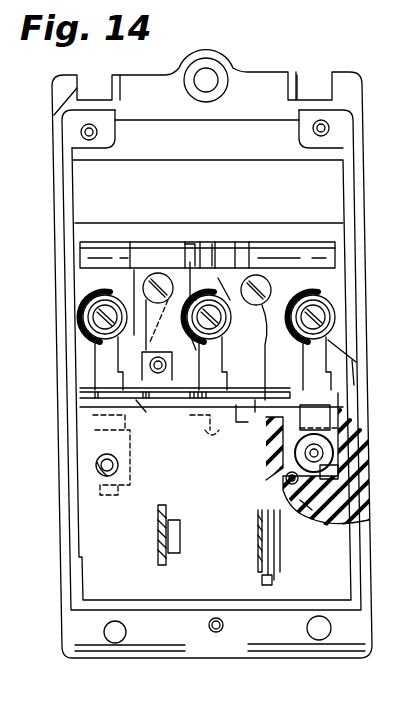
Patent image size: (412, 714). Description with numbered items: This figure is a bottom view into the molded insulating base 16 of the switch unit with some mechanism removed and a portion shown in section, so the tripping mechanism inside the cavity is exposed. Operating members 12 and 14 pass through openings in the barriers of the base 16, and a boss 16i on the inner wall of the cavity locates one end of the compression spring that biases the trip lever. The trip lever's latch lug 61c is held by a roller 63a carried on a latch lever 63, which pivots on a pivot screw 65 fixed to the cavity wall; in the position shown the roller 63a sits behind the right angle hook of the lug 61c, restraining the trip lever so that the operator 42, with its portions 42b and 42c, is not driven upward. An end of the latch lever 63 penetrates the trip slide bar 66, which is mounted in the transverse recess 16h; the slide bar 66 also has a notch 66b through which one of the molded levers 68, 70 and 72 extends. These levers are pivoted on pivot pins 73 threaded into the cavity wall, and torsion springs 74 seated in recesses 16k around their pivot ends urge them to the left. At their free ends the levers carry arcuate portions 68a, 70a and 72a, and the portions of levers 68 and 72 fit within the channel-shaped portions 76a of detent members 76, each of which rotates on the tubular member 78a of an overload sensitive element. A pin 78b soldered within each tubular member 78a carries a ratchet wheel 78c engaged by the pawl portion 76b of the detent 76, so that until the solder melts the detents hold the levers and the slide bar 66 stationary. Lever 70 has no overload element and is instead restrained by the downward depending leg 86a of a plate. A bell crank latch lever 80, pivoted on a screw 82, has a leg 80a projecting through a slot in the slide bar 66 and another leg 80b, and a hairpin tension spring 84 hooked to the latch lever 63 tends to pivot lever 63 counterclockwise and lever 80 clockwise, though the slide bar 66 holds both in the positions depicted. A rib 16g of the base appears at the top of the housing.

The operating member 12 is at (272, 579).
The operating member 14 is at (156, 524).
The molded insulating base 16 is at (148, 652).
The housing rib 16g is at (298, 88).
The transverse recess 16h is at (353, 371).
The boss 16i is at (97, 468).
The recesses 16k is at (84, 285).
The operator 42 is at (100, 252).
The strip portion 42b is at (183, 246).
The strip portion 42c is at (214, 275).
The latch lug 61c is at (165, 406).
The latch lever 63 is at (136, 272).
The roller 63a is at (142, 411).
The pivot screw 65 is at (158, 282).
The trip slide bar 66 is at (340, 389).
The notch 66b is at (242, 422).
The lever 68 is at (96, 362).
The arcuate portion 68a is at (97, 416).
The lever 70 is at (186, 342).
The arcuate portion 70a is at (212, 432).
The lever 72 is at (340, 352).
The arcuate portion 72a is at (345, 418).
The pivot pins 73 is at (96, 317).
The torsion springs 74 is at (84, 298).
The detent member 76 is at (97, 461).
The channel-shaped portion 76a is at (97, 432).
The pawl portion 76b is at (105, 492).
The tubular member 78a is at (290, 479).
The pin 78b is at (338, 468).
The ratchet wheel 78c is at (318, 453).
The bell crank latch lever 80 is at (277, 313).
The leg 80a is at (255, 410).
The leg 80b is at (220, 278).
The screw 82 is at (258, 278).
The hairpin type tension spring 84 is at (194, 262).
The downward depending leg 86a is at (200, 430).